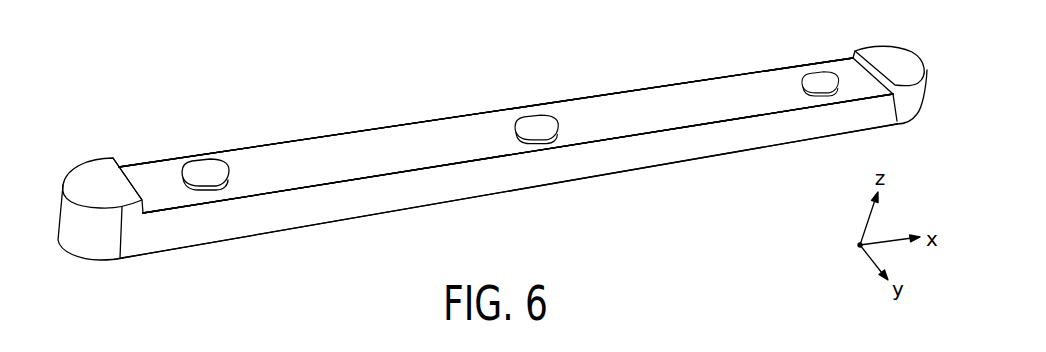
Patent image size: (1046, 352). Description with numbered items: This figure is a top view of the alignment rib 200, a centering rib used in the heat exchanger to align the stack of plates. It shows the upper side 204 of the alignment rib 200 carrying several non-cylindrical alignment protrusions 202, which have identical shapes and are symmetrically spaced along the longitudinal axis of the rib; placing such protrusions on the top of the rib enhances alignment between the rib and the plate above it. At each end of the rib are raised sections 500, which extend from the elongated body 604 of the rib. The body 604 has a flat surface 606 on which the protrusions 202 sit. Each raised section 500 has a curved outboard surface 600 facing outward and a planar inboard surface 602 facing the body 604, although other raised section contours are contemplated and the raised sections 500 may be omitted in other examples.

The alignment rib 200 is at (106, 83).
The non-cylindrical alignment protrusions 202 is at (197, 172).
The upper side 204 is at (341, 96).
The raised sections 500 is at (89, 168).
The curved outboard surface 600 is at (75, 240).
The planar inboard surface 602 is at (138, 193).
The body 604 is at (427, 123).
The flat surface 606 is at (280, 162).